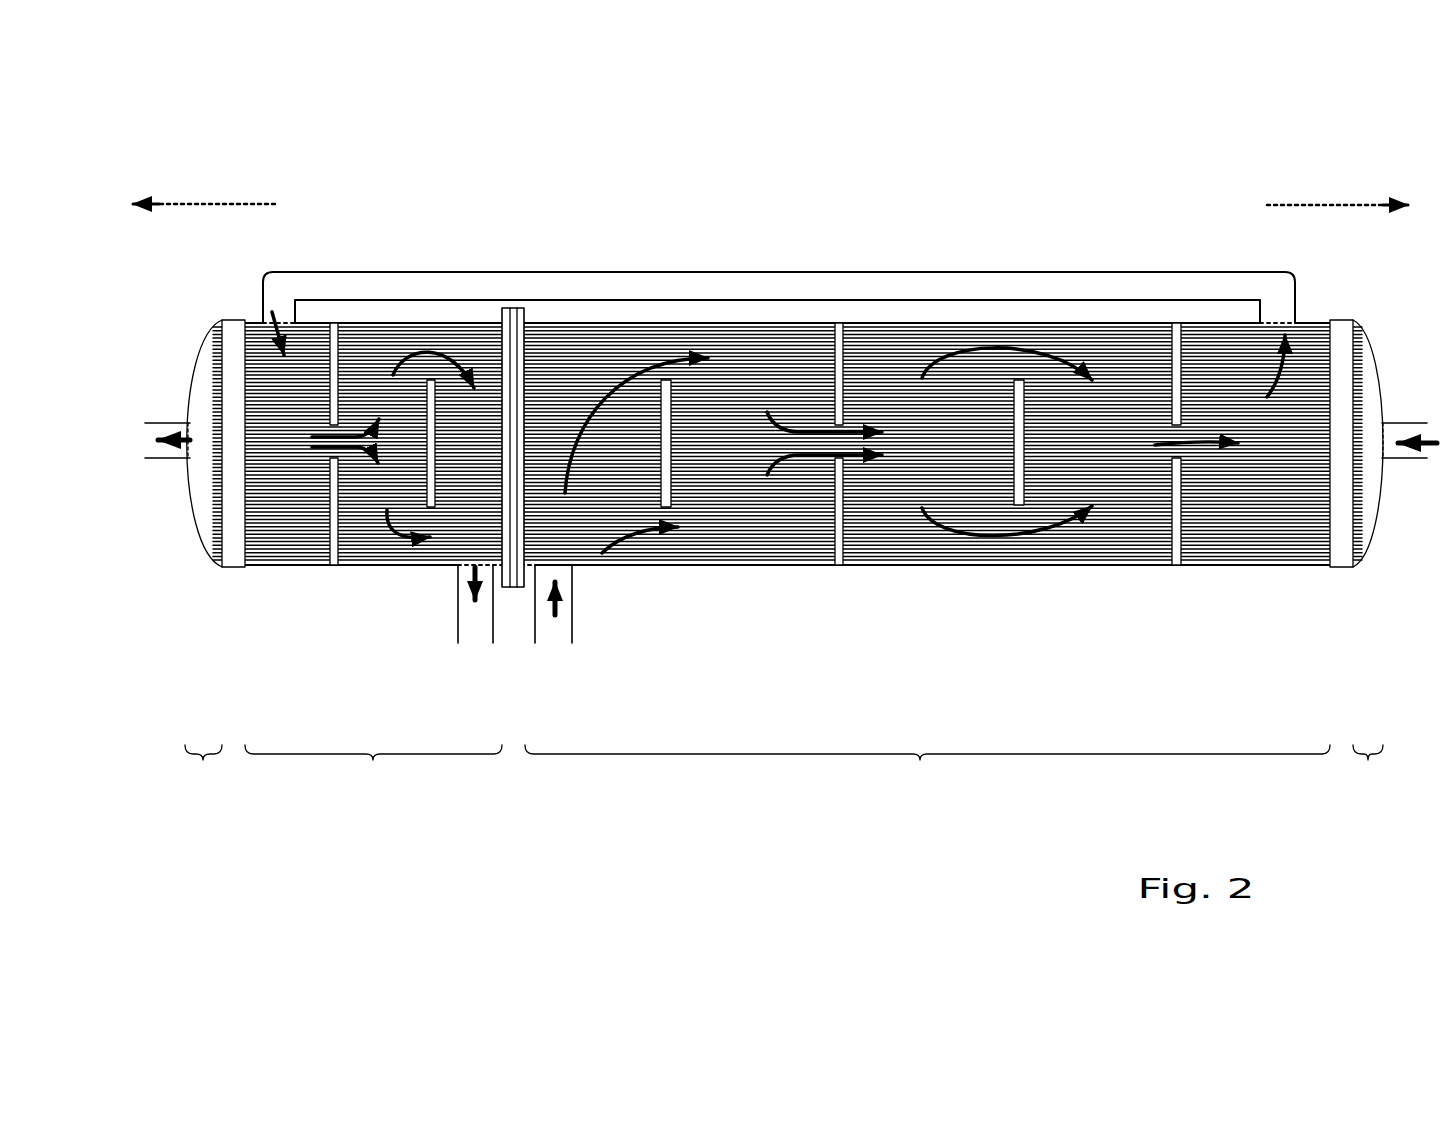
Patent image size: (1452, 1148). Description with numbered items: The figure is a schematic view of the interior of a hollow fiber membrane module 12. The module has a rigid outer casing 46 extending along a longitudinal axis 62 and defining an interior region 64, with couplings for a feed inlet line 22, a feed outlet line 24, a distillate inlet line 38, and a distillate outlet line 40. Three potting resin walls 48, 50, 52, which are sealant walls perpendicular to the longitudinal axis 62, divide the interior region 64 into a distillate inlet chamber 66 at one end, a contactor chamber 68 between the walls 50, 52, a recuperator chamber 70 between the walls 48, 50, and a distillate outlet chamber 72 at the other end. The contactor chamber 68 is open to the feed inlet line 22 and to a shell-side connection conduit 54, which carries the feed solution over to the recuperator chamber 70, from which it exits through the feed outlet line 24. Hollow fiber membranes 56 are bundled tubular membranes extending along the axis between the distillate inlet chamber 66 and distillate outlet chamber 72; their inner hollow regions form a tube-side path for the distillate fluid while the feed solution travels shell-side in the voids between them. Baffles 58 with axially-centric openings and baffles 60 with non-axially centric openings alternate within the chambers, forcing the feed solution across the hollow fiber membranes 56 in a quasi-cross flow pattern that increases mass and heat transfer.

The membrane module 12 is at (1007, 165).
The feed inlet line 22 is at (572, 612).
The feed outlet line 24 is at (458, 625).
The distillate inlet line 38 is at (1395, 423).
The distillate outlet line 40 is at (165, 458).
The outer casing 46 is at (1315, 322).
The potting resin wall 48 is at (238, 568).
The potting resin wall 50 is at (518, 588).
The potting resin wall 52 is at (1340, 568).
The connection conduit 54 is at (653, 272).
The hollow fiber membranes 56 is at (1278, 554).
The baffles 58 is at (330, 568).
The baffles 60 is at (430, 509).
The longitudinal axis 62 is at (230, 203).
The interior region 64 is at (907, 565).
The distillate inlet chamber 66 is at (1367, 769).
The contactor chamber 68 is at (927, 769).
The recuperator chamber 70 is at (373, 769).
The distillate outlet chamber 72 is at (203, 769).